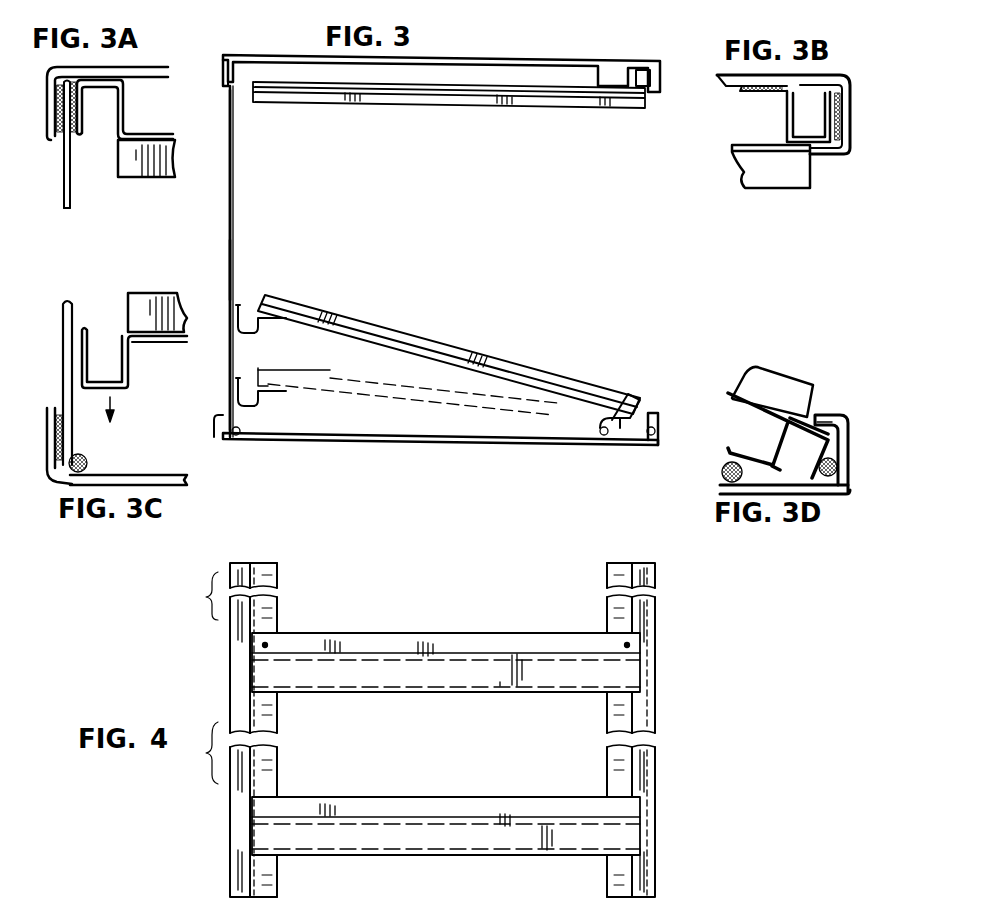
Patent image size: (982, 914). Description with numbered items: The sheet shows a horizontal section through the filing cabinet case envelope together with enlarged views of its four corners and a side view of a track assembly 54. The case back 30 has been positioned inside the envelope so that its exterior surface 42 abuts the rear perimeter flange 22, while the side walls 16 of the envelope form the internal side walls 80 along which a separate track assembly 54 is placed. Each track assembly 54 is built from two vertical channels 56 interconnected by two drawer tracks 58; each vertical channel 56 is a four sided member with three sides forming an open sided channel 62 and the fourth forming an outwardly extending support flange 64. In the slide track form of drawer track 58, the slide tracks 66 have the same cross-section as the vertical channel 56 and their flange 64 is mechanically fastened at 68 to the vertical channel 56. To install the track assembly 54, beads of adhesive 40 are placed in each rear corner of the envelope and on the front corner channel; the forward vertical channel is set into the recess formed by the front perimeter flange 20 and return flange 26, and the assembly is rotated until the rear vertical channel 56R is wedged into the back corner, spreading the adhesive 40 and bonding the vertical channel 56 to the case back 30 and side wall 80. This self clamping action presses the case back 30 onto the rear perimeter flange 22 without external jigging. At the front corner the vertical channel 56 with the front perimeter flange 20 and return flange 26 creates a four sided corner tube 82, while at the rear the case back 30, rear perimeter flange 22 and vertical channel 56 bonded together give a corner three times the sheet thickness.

In FIG. 3A, the case envelope side wall 16 is at (152, 67).
In FIG. 3, the case envelope side wall 16 is at (452, 58).
In FIG. 3B, the case envelope side wall 16 is at (735, 80).
In FIG. 3C, the case envelope side wall 16 is at (180, 486).
In FIG. 3D, the case envelope side wall 16 is at (812, 496).
In FIG. 3B, the front perimeter flange 20 is at (850, 110).
In FIG. 3D, the front perimeter flange 20 is at (850, 440).
In FIG. 3A, the rear perimeter flange 22 is at (46, 88).
In FIG. 3, the rear perimeter flange 22 is at (220, 72).
In FIG. 3C, the rear perimeter flange 22 is at (52, 447).
In FIG. 3B, the return flange 26 is at (826, 152).
In FIG. 3D, the return flange 26 is at (832, 420).
In FIG. 3A, the case back 30 is at (72, 190).
In FIG. 3, the case back 30 is at (234, 184).
In FIG. 3C, the case back 30 is at (48, 295).
In FIG. 3A, the adhesive 40 is at (58, 133).
In FIG. 3C, the adhesive 40 is at (66, 470).
In FIG. 3D, the adhesive 40 is at (722, 470).
In FIG. 3A, the exterior surface 42 is at (66, 206).
In FIG. 3, the exterior surface 42 is at (226, 196).
In FIG. 4, the track assembly 54 is at (732, 688).
In FIG. 3A, the vertical channel 56 is at (145, 111).
In FIG. 3B, the vertical channel 56 is at (771, 166).
In FIG. 3D, the vertical channel 56 is at (738, 420).
In FIG. 4, the vertical channel 56 is at (650, 600).
In FIG. 3C, the rear vertical channel 56R is at (128, 386).
In FIG. 4, the drawer track 58 is at (456, 604).
In FIG. 3A, the open sided channel 62 is at (146, 158).
In FIG. 3C, the open sided channel 62 is at (104, 318).
In FIG. 3D, the open sided channel 62 is at (772, 392).
In FIG. 4, the open sided channel 62 is at (240, 568).
In FIG. 3C, the support flange 64 is at (165, 344).
In FIG. 4, the support flange 64 is at (262, 566).
In FIG. 4, the slide track 66 is at (352, 668).
In FIG. 4, the mechanical fastening 68 is at (263, 645).
In FIG. 3, the internal side wall 80 is at (412, 66).
In FIG. 3B, the corner tube 82 is at (756, 104).